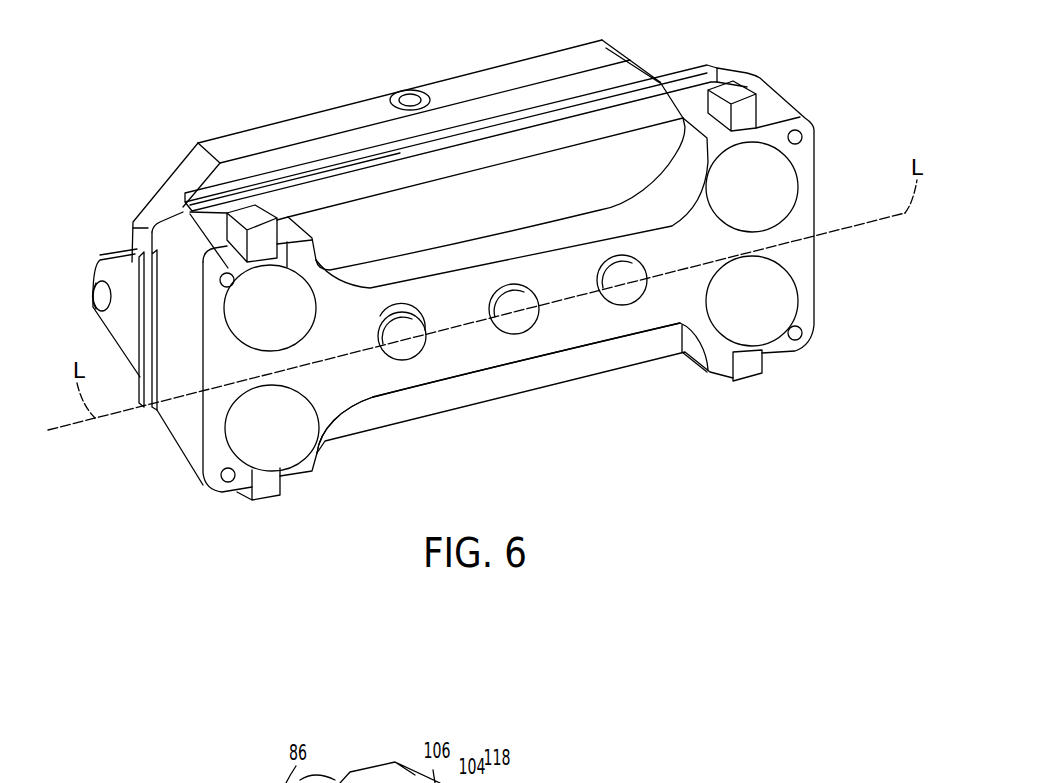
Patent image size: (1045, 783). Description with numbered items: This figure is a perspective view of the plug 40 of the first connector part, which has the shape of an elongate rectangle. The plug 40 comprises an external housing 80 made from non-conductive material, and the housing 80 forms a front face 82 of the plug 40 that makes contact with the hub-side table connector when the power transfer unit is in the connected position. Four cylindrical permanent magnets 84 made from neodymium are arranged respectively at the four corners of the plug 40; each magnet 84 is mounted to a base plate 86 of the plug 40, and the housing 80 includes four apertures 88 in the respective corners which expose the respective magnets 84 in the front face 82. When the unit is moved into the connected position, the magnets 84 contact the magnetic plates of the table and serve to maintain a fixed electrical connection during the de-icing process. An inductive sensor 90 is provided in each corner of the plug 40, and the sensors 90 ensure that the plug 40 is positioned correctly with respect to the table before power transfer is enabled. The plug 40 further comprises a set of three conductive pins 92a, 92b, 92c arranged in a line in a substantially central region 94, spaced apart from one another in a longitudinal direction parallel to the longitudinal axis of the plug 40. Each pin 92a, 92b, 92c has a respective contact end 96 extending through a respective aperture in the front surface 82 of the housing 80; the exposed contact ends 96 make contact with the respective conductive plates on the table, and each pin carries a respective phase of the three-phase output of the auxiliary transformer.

The plug 40 is at (840, 173).
The external housing 80 is at (527, 137).
The front face 82 is at (340, 393).
The cylindrical permanent magnets 84 is at (247, 303).
The base plate 86 is at (263, 188).
The apertures 88 is at (218, 330).
The inductive sensor 90 is at (802, 331).
The conductive pin 92a is at (405, 366).
The conductive pin 92b is at (514, 344).
The conductive pin 92c is at (627, 316).
The central region 94 is at (458, 352).
The contact end 96 is at (402, 323).